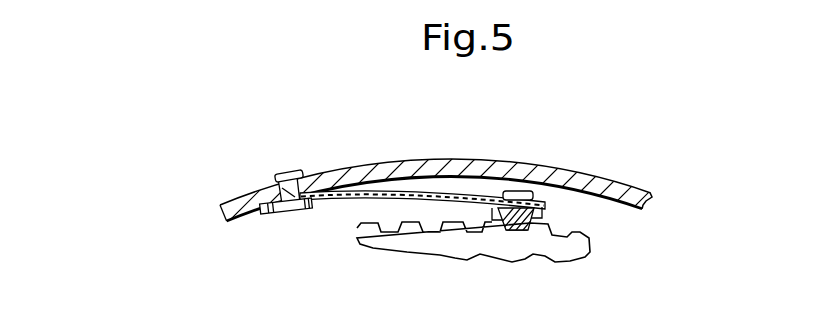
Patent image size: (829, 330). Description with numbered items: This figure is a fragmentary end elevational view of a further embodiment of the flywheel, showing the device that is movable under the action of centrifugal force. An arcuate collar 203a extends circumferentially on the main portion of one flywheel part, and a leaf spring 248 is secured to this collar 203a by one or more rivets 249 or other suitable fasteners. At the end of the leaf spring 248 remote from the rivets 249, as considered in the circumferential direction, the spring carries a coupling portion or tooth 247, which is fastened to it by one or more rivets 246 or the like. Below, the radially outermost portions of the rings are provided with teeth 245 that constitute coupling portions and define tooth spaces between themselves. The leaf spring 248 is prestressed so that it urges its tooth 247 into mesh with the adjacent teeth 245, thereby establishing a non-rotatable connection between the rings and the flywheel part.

The collar 203a is at (626, 191).
The leaf spring 248 is at (411, 196).
The rivets 249 is at (281, 186).
The rivets 246 is at (528, 193).
The tooth 247 is at (517, 231).
The teeth 245 is at (408, 231).